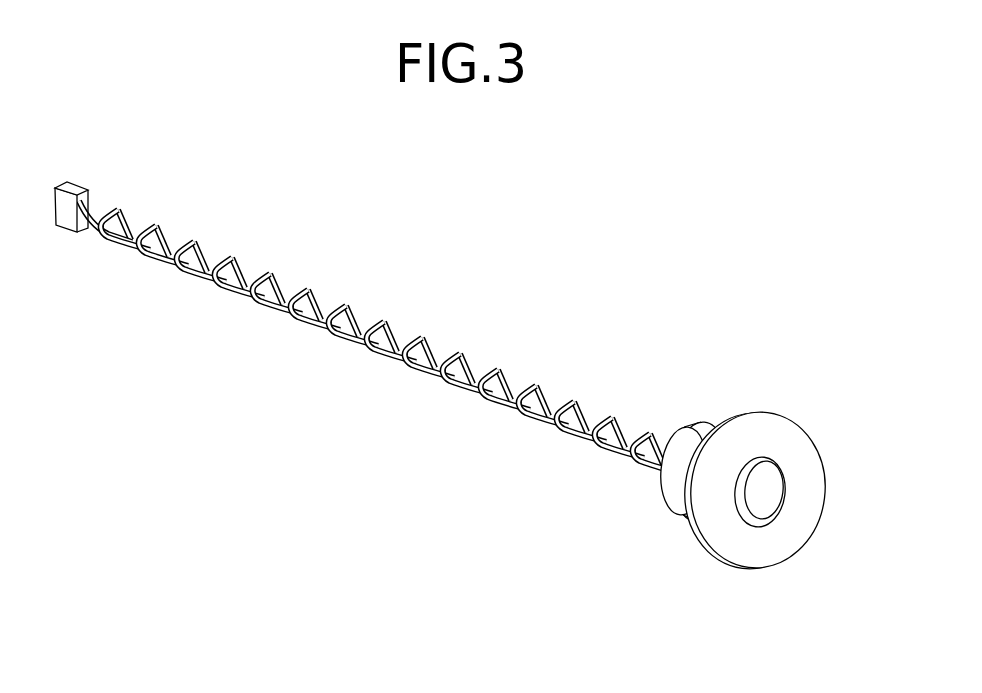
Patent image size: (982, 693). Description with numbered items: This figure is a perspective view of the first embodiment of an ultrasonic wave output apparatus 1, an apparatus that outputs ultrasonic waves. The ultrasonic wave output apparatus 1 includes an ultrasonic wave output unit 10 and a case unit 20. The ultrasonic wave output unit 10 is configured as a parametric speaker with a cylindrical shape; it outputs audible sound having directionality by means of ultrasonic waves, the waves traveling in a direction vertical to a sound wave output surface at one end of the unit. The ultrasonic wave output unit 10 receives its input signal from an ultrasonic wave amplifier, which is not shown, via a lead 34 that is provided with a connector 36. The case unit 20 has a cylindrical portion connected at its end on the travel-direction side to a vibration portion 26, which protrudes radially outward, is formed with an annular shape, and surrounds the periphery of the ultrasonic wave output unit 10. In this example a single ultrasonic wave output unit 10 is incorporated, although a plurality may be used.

The ultrasonic wave output apparatus 1 is at (764, 433).
The ultrasonic wave output unit 10 is at (760, 492).
The case unit 20 is at (711, 432).
The vibration portion 26 is at (795, 415).
The lead 34 is at (403, 340).
The connector 36 is at (72, 187).